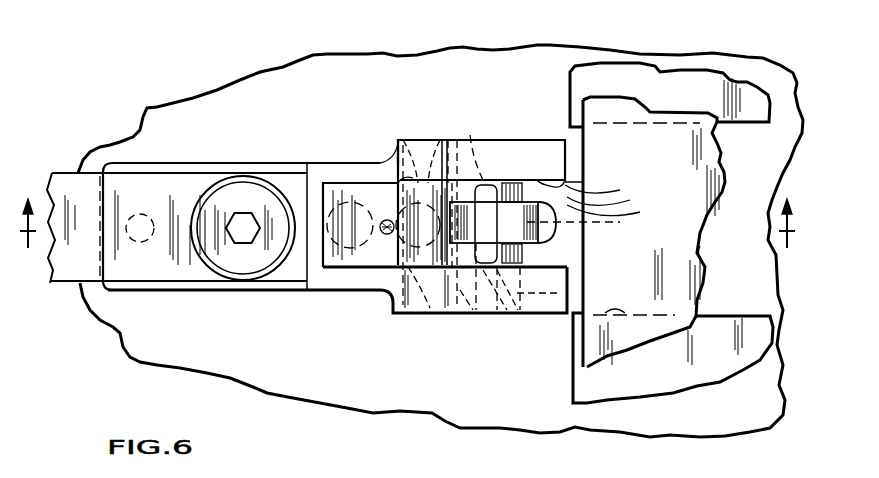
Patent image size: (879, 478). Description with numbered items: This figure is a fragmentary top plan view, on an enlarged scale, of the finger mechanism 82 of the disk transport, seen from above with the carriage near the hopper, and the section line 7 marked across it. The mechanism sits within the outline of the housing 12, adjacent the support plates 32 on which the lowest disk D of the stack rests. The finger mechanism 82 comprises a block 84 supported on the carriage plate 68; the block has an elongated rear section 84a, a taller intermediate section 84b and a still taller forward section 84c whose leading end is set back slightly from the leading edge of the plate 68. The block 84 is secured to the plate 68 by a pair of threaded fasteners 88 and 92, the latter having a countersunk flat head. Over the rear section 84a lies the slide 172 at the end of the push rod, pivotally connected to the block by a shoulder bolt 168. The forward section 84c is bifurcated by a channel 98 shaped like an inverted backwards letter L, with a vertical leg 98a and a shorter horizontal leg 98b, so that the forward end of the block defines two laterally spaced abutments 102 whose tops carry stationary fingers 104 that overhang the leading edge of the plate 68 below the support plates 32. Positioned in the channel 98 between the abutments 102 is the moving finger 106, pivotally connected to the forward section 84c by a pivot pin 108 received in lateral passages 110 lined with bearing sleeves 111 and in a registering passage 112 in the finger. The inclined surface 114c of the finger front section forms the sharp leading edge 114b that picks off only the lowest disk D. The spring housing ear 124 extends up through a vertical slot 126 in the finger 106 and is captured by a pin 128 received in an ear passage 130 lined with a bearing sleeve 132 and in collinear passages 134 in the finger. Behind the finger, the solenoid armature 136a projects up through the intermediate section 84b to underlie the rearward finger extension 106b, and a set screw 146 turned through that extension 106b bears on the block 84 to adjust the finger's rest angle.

The housing 12 is at (738, 62).
The carriage plate 68 is at (177, 107).
The support plates 32 is at (756, 116).
The finger mechanism 82 is at (560, 118).
The stationary fingers 104 is at (580, 157).
The abutments 102 is at (523, 180).
The slide 172 is at (61, 275).
The threaded fastener 88 is at (147, 210).
The block 84 is at (315, 166).
The rear section 84a is at (272, 162).
The intermediate section 84b is at (324, 185).
The forward section 84c is at (500, 140).
The shoulder bolt 168 is at (237, 187).
The finger extension 106b is at (275, 321).
The solenoid armature 136a is at (360, 321).
The set screw 146 is at (393, 275).
The channel 98 is at (548, 140).
The ear passage 130 is at (526, 163).
The threaded fastener 92 is at (392, 142).
The vertical leg 98a is at (662, 183).
The horizontal leg 98b is at (395, 148).
The leading edge 114b is at (704, 210).
The inclined surface 114c is at (600, 194).
The lateral passages 110 is at (430, 140).
The bearing sleeves 111 is at (410, 140).
The lateral passage 112 is at (450, 140).
The lateral passages 134 is at (477, 175).
The pivot pin 108 is at (420, 313).
The pin 128 is at (495, 305).
The ear 124 is at (571, 222).
The vertical slot 126 is at (583, 232).
The bearing sleeve 132 is at (583, 231).
The moving finger 106 is at (571, 232).
The disk D is at (703, 252).
The section line 7 is at (407, 236).